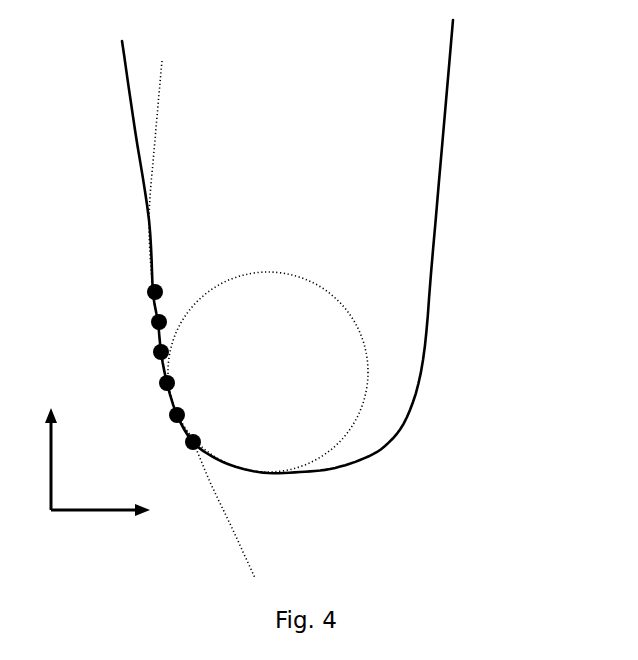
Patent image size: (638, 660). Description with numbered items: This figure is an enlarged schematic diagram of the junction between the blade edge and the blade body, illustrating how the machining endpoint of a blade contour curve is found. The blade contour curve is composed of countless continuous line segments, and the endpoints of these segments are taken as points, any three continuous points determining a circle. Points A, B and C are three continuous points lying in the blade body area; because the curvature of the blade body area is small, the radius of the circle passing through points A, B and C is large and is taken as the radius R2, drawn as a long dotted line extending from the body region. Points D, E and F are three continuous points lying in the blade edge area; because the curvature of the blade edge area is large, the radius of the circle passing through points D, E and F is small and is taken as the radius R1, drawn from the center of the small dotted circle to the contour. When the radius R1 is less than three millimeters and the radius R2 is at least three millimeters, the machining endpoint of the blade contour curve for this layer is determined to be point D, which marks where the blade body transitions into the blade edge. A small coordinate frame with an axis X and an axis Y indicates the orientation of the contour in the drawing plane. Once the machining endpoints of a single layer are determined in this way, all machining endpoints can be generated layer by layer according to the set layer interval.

The continuous point in blade body area A is at (130, 278).
The continuous point in blade body area B is at (132, 322).
The continuous point in blade body area C is at (137, 354).
The continuous point in blade edge area D is at (145, 387).
The continuous point in blade edge area E is at (156, 425).
The continuous point in blade edge area F is at (171, 455).
The radius of circle through blade edge points R1 is at (177, 415).
The radius of circle through blade body points R2 is at (158, 322).
The X axis X is at (108, 518).
The Y axis Y is at (40, 455).